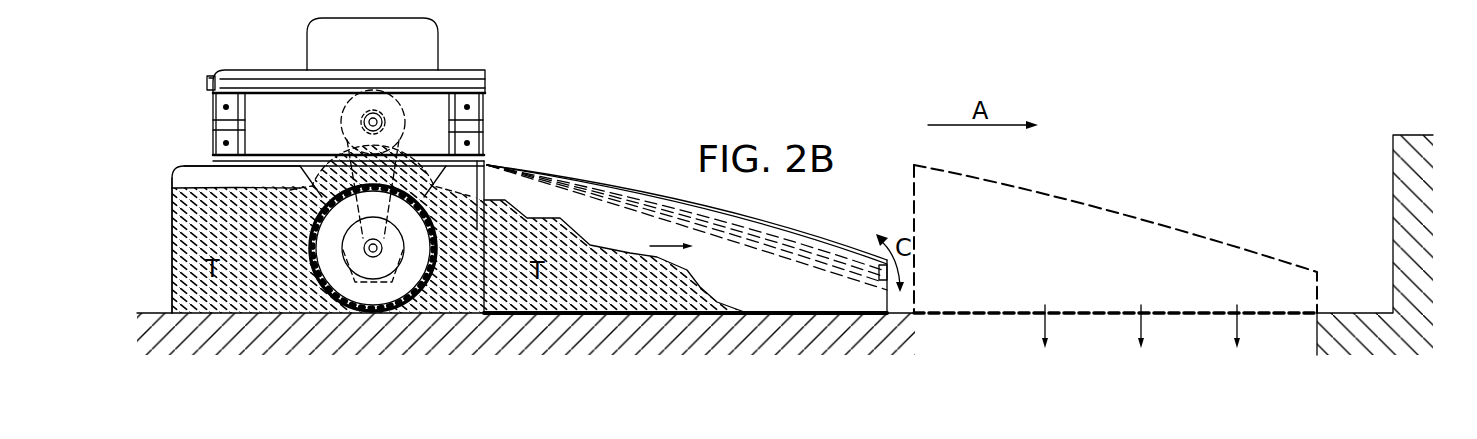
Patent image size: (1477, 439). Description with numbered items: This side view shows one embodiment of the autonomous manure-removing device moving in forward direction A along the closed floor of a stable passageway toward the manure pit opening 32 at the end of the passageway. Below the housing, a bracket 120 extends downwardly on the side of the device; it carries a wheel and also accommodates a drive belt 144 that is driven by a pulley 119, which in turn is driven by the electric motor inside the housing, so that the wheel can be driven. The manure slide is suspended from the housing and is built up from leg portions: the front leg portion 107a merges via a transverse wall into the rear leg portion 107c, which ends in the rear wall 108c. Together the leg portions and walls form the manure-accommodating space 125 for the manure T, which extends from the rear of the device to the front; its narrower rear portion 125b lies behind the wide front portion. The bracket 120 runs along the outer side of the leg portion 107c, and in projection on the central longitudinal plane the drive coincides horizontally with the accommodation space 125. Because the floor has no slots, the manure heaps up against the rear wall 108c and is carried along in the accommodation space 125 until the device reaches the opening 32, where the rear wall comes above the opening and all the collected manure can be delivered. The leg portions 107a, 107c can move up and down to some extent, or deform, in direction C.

The manure pit opening 32 is at (1112, 358).
The leg portion 107c is at (328, 229).
The leg portion 107a is at (636, 237).
The rear wall 108c is at (173, 227).
The pulley 119 is at (250, 0).
The bracket 120 is at (247, 0).
The manure-accommodating space 125 is at (563, 197).
The rear portion 125b is at (197, 177).
The drive belt 144 is at (397, 168).